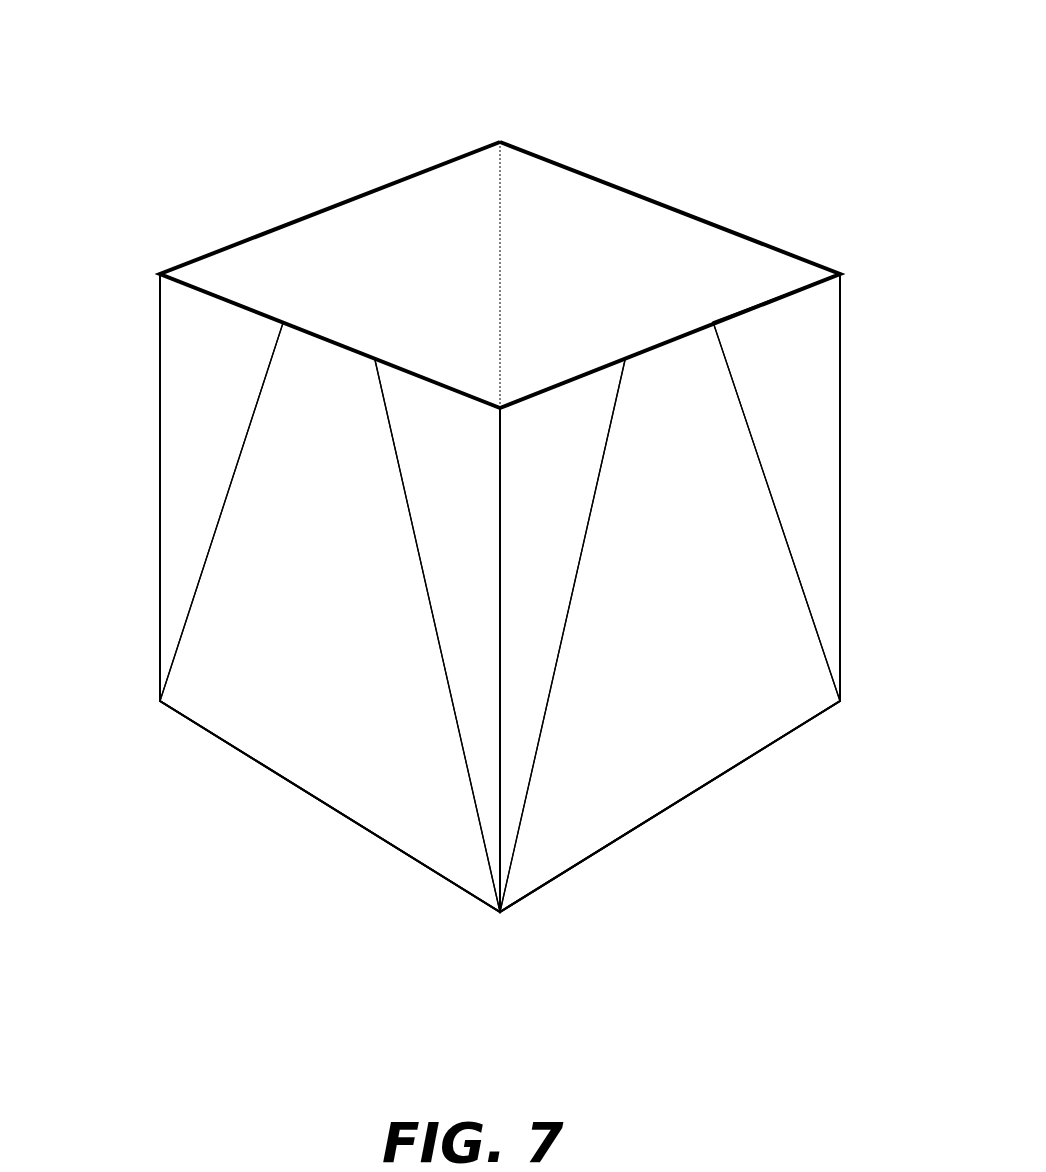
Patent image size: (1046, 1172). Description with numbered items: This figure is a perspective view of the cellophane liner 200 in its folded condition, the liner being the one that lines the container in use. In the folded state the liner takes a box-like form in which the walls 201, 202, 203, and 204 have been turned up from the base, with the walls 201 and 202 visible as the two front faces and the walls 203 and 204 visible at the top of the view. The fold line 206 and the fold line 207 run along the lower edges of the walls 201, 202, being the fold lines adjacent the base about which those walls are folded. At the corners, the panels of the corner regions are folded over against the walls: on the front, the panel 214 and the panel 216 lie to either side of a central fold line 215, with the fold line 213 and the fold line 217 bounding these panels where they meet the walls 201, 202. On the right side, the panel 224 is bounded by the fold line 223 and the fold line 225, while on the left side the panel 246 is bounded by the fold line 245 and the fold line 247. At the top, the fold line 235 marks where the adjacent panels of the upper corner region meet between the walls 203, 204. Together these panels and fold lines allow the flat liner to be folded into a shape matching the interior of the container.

The cellophane liner 200 is at (222, 60).
The wall 201 is at (312, 709).
The wall 202 is at (760, 709).
The wall 203 is at (630, 294).
The wall 204 is at (398, 296).
The fold line 206 is at (289, 785).
The fold line 207 is at (713, 785).
The fold line 213 is at (430, 618).
The panel 214 is at (470, 738).
The fold line 215 is at (500, 803).
The panel 216 is at (530, 737).
The fold line 217 is at (570, 616).
The fold line 223 is at (793, 565).
The panel 224 is at (830, 507).
The fold line 225 is at (842, 419).
The fold line 235 is at (500, 199).
The fold line 245 is at (159, 419).
The panel 246 is at (170, 508).
The fold line 247 is at (205, 564).